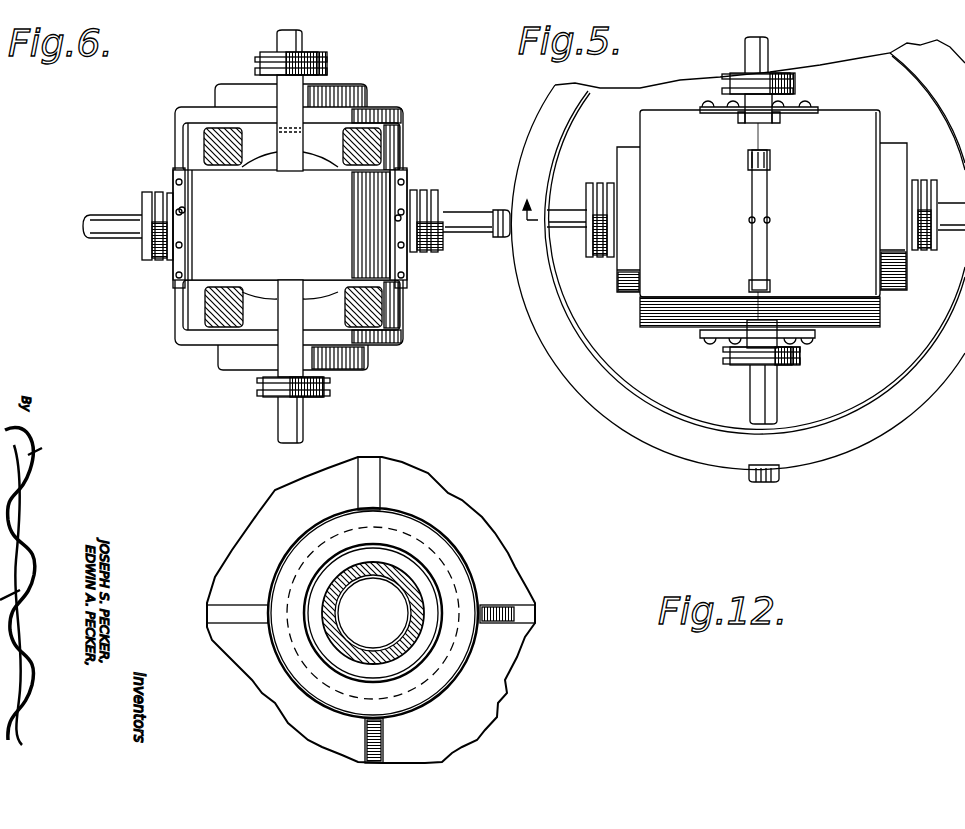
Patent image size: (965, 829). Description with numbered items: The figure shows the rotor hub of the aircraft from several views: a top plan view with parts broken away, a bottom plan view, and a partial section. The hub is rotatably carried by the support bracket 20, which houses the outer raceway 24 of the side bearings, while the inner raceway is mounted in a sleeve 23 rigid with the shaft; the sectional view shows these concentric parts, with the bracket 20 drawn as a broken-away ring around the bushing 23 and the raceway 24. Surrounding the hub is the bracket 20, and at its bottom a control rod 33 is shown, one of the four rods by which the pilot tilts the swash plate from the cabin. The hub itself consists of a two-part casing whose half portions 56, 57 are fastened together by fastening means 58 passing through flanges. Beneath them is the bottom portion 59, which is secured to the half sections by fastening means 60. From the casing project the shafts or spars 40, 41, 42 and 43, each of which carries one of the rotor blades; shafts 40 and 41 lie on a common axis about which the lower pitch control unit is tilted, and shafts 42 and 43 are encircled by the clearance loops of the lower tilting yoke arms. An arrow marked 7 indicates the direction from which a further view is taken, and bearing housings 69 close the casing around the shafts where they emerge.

In FIG. 5, the section line arrow 7 is at (528, 224).
In FIG. 12, the support bracket 20 is at (400, 522).
In FIG. 12, the sleeve 23 is at (403, 645).
In FIG. 12, the outer raceway 24 is at (427, 593).
In FIG. 5, the control rods 33 is at (779, 474).
In FIG. 6, the shaft 40 is at (292, 40).
In FIG. 5, the shaft 40 is at (763, 47).
In FIG. 6, the shaft 41 is at (107, 228).
In FIG. 5, the shaft 41 is at (763, 385).
In FIG. 6, the shaft 42 is at (467, 238).
In FIG. 5, the shaft 42 is at (578, 232).
In FIG. 6, the shaft 43 is at (295, 415).
In FIG. 5, the half portion of hub casing 56 is at (773, 218).
In FIG. 5, the half portion of hub casing 57 is at (660, 219).
In FIG. 5, the fastening means 58 is at (782, 253).
In FIG. 6, the bottom portion 59 is at (290, 226).
In FIG. 6, the fastening means 60 is at (184, 210).
In FIG. 6, the bearing housing 69 is at (285, 99).